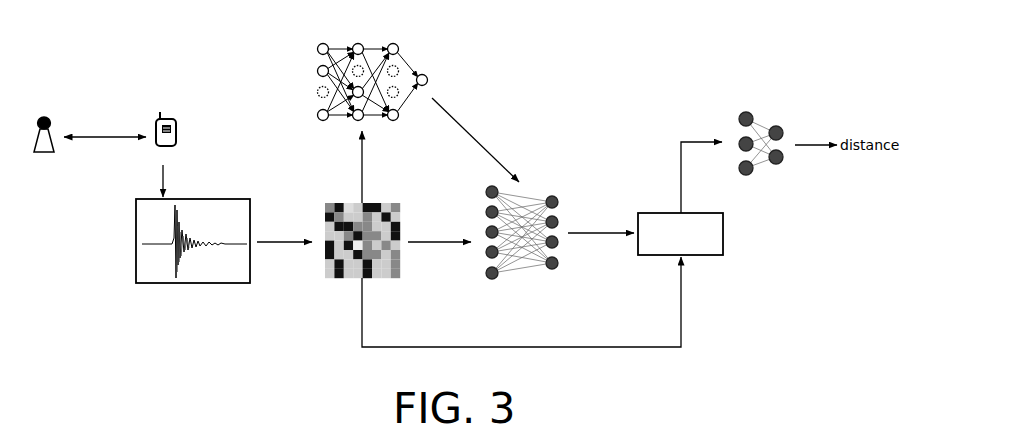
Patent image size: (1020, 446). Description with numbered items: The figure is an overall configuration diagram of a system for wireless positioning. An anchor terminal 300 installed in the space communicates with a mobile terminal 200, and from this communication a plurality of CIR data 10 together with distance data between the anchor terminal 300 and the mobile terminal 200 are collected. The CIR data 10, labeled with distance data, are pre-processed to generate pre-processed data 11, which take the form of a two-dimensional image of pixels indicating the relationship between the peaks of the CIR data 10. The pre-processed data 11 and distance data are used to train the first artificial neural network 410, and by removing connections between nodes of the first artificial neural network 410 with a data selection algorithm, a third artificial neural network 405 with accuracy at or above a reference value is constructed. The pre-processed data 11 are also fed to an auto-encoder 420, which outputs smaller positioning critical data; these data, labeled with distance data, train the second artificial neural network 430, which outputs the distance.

The anchor terminal 300 is at (43, 116).
The mobile terminal 200 is at (173, 116).
The CIR data 10 is at (192, 284).
The pre-processed data 11 is at (332, 198).
The third artificial neural network 405 is at (425, 57).
The first artificial neural network 410 is at (548, 181).
The auto-encoder 420 is at (658, 210).
The second artificial neural network 430 is at (772, 111).